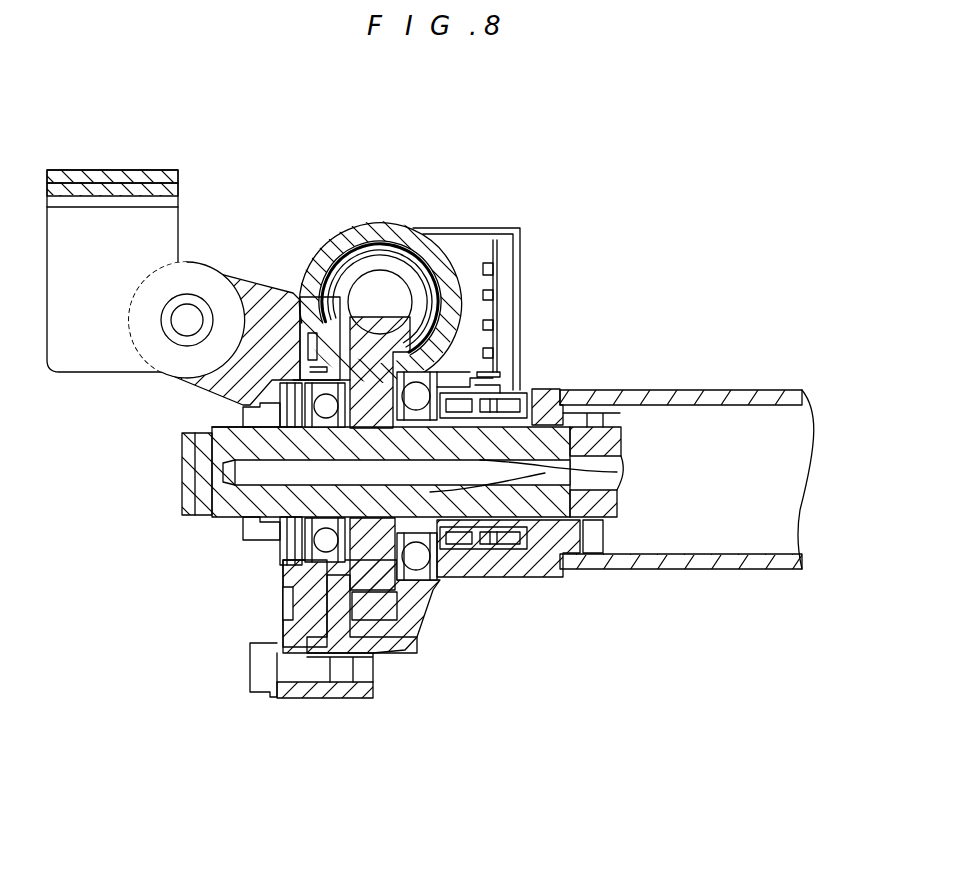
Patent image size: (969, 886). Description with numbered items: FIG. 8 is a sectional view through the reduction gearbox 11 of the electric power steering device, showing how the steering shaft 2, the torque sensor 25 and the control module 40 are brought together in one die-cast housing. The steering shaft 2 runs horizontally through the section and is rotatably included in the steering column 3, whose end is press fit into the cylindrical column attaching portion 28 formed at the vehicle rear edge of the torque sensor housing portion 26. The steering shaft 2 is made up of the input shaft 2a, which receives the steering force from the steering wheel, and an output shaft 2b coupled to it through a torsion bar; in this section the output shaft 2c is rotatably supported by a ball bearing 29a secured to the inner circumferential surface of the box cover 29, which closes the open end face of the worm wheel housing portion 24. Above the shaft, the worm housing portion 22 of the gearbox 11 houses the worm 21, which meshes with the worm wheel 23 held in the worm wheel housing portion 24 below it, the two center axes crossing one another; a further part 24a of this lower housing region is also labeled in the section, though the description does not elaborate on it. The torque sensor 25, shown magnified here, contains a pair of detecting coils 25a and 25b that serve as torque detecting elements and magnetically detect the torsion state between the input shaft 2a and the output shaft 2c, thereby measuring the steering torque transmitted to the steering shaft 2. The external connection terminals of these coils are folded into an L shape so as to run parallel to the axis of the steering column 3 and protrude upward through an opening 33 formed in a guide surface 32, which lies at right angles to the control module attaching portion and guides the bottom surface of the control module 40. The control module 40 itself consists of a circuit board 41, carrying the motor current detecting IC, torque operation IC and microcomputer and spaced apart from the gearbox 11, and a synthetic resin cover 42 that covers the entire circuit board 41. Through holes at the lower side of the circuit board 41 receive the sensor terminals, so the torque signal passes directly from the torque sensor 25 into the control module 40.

The steering shaft 2 is at (431, 516).
The input shaft 2a is at (633, 434).
The output shaft 2b is at (396, 516).
The output shaft 2c is at (200, 424).
The steering column 3 is at (687, 447).
The reduction gearbox 11 is at (307, 869).
The worm 21 is at (364, 256).
The worm housing portion 22 is at (352, 297).
The worm wheel 23 is at (290, 485).
The worm wheel housing portion 24 is at (362, 643).
The seal member 24a is at (425, 629).
The torque sensor 25 is at (602, 392).
The detecting coil 25a is at (644, 503).
The detecting coil 25b is at (574, 469).
The torque sensor housing portion 26 is at (508, 594).
The cylindrical column attaching portion 28 is at (600, 581).
The box cover 29 is at (258, 608).
The ball bearing 29a is at (257, 588).
The guide surface 32 is at (568, 357).
The opening 33 is at (468, 363).
The control module 40 is at (535, 280).
The circuit board 41 is at (546, 306).
The cover 42 is at (466, 280).